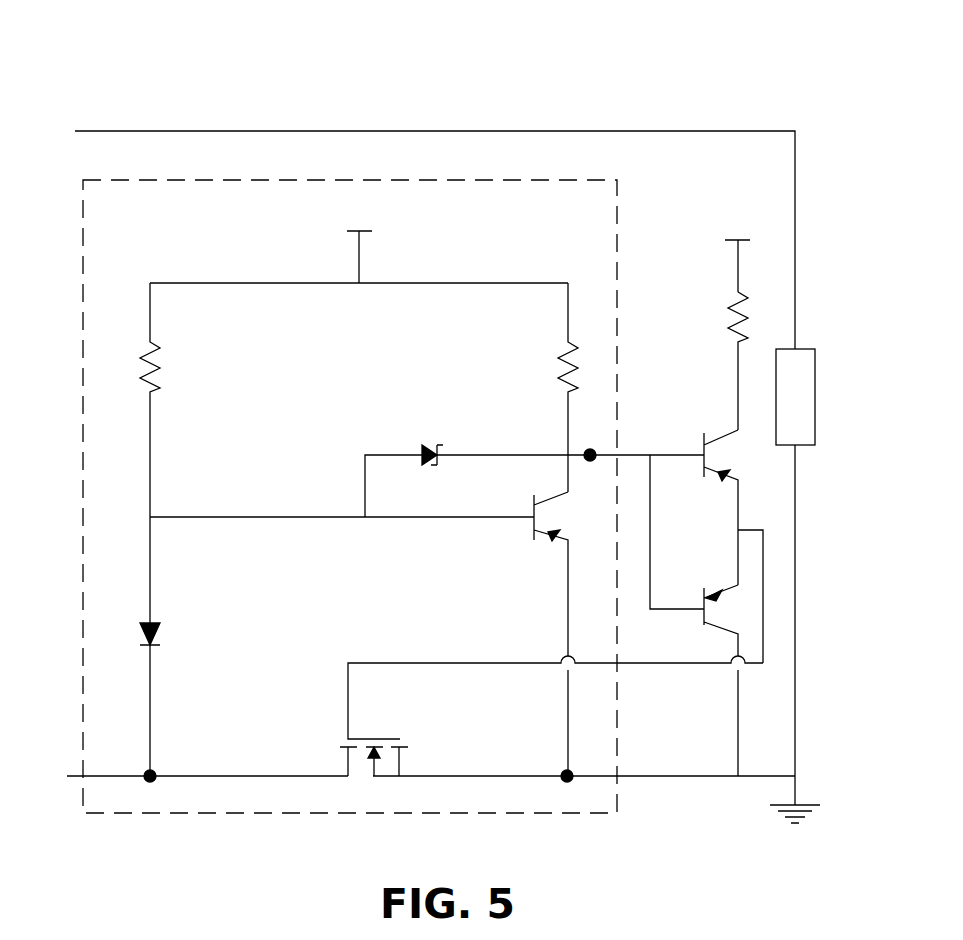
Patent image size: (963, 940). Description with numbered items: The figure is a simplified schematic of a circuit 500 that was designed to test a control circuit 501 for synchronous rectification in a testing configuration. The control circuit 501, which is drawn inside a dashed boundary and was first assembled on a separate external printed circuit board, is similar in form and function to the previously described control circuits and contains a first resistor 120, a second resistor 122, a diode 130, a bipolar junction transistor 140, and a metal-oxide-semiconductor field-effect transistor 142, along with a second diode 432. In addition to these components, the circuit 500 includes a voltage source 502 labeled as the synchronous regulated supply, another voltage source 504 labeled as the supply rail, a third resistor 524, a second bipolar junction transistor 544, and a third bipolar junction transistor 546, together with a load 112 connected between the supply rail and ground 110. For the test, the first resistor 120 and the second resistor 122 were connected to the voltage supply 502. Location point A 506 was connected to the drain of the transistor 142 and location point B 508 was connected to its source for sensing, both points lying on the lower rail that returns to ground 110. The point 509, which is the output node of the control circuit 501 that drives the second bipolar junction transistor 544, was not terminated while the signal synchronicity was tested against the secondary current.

The circuit 500 is at (158, 50).
The control circuit 501 is at (83, 242).
The voltage source (SYNC_VREG) 502 is at (370, 240).
The voltage source (SVCC) 504 is at (720, 244).
The first resistor 120 is at (160, 368).
The second resistor 122 is at (556, 362).
The third resistor 524 is at (733, 312).
The diode 130 is at (160, 640).
The second diode D2 432 is at (433, 441).
The bipolar junction transistor 140 is at (522, 538).
The metal-oxide-semiconductor field-effect transistor 142 is at (381, 788).
The second BJT 544 is at (712, 423).
The third BJT 546 is at (708, 644).
The point V0 509 is at (591, 449).
The location point A 506 is at (150, 792).
The location point B 508 is at (570, 792).
The load 112 is at (820, 345).
The ground 110 is at (805, 797).